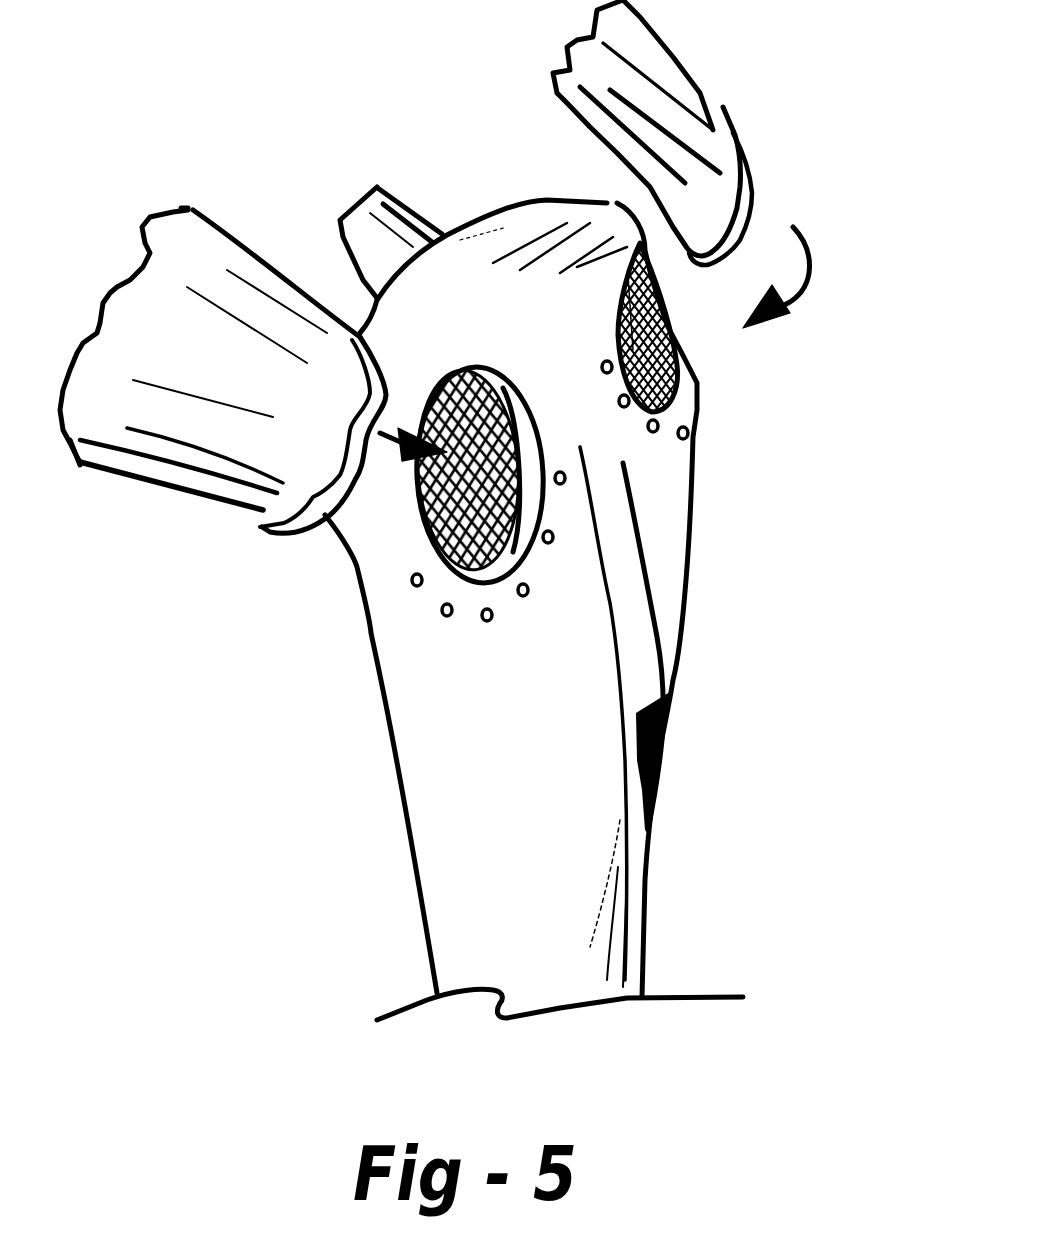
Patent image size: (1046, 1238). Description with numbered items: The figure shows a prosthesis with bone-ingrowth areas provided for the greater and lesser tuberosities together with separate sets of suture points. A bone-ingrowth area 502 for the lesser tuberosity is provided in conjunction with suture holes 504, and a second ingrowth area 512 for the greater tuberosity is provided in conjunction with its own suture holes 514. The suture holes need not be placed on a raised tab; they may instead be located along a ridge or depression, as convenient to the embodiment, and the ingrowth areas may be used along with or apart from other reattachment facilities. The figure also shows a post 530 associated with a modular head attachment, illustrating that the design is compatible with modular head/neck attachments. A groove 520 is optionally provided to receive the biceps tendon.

The bone-ingrowth area 502 is at (420, 510).
The suture holes 504 is at (450, 627).
The ingrowth area 512 is at (667, 325).
The suture holes 514 is at (657, 450).
The groove 520 is at (647, 720).
The post 530 is at (397, 198).